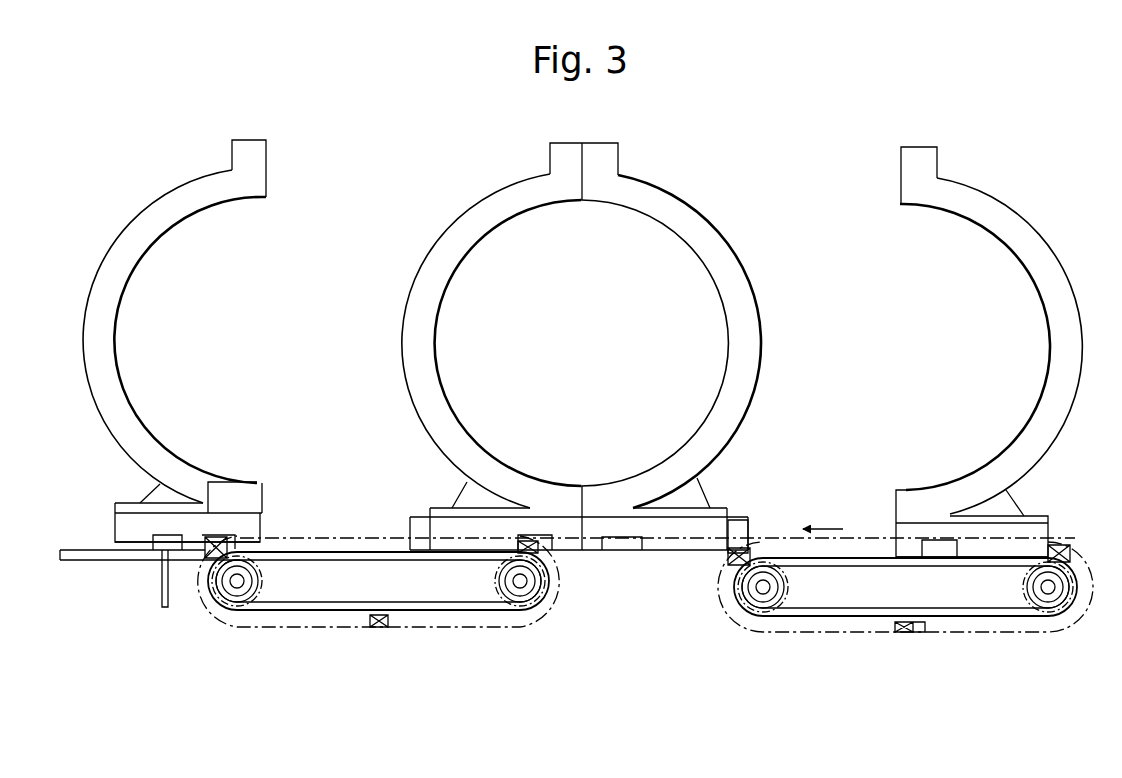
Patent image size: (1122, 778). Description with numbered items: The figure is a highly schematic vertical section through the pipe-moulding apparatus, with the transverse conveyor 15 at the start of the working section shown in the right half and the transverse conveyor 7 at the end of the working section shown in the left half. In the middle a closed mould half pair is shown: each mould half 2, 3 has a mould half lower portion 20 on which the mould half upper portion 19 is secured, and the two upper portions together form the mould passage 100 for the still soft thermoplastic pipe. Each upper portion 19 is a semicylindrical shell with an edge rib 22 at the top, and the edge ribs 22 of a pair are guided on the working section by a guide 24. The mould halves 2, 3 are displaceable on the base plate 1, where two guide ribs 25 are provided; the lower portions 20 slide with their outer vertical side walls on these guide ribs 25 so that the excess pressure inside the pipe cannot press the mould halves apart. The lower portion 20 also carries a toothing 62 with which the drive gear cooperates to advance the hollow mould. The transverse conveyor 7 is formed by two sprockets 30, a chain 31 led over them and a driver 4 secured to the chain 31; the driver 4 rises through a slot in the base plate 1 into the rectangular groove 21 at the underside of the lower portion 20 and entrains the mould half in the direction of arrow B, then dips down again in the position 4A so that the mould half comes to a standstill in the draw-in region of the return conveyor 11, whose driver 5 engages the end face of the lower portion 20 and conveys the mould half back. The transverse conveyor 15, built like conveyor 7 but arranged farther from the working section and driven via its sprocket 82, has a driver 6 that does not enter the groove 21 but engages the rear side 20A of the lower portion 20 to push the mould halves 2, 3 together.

The base plate 1 is at (72, 560).
The mould half 2 is at (737, 250).
The mould half 3 is at (117, 243).
The driver 4 is at (530, 533).
The driver position 4A is at (225, 542).
The driver 5 is at (160, 550).
The driver 6 is at (1068, 552).
The transverse conveyor 7 is at (417, 617).
The return conveyor 11 is at (160, 592).
The transverse conveyor 15 is at (935, 620).
The mould half upper portion 19 is at (85, 322).
The mould half lower portion 20 is at (120, 500).
The rear side of the mould lower portion 20A is at (115, 528).
The groove 21 is at (208, 530).
The edge rib 22 is at (232, 155).
The guide 24 is at (549, 165).
The guide ribs 25 is at (413, 530).
The sprocket 30 is at (252, 592).
The chain 31 is at (312, 606).
The toothing 62 is at (464, 550).
The sprocket 82 is at (783, 598).
The mould passage 100 is at (590, 354).
The arrow B is at (318, 525).